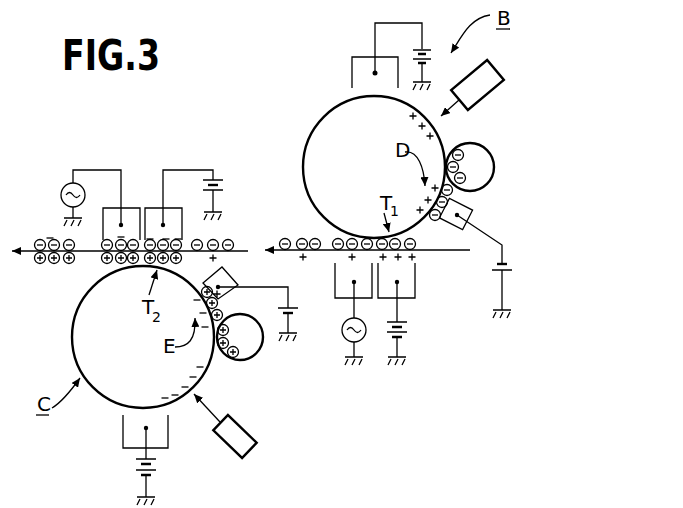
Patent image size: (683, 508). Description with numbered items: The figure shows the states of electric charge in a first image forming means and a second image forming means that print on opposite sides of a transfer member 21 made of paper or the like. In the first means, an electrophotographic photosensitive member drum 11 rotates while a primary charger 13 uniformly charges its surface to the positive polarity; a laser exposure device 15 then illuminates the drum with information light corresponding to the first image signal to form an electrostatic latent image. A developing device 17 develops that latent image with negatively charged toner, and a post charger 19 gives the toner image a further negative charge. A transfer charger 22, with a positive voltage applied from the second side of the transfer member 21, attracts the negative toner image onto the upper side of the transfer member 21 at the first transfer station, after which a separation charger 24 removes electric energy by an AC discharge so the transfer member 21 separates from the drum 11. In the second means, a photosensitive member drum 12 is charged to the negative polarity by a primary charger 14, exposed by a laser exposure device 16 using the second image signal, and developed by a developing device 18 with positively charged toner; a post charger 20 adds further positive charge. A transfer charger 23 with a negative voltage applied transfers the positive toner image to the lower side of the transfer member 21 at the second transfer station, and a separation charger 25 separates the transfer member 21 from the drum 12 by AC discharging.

The photosensitive member drum 11 is at (326, 110).
The photosensitive member drum 12 is at (73, 328).
The primary charger 13 is at (358, 57).
The primary charger 14 is at (170, 434).
The laser exposure device 15 is at (488, 96).
The laser exposure device 16 is at (258, 450).
The developing device 17 is at (494, 171).
The developing device 18 is at (262, 350).
The post charger 19 is at (474, 211).
The post charger 20 is at (238, 278).
The transfer member 21 is at (437, 252).
The transfer charger 22 is at (415, 292).
The transfer charger 23 is at (160, 208).
The separation charger 24 is at (337, 299).
The separation charger 25 is at (132, 208).